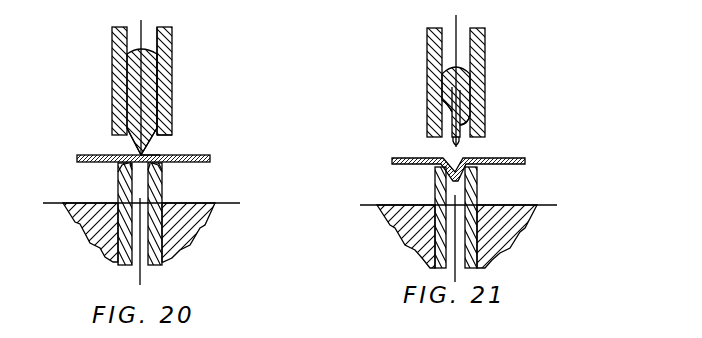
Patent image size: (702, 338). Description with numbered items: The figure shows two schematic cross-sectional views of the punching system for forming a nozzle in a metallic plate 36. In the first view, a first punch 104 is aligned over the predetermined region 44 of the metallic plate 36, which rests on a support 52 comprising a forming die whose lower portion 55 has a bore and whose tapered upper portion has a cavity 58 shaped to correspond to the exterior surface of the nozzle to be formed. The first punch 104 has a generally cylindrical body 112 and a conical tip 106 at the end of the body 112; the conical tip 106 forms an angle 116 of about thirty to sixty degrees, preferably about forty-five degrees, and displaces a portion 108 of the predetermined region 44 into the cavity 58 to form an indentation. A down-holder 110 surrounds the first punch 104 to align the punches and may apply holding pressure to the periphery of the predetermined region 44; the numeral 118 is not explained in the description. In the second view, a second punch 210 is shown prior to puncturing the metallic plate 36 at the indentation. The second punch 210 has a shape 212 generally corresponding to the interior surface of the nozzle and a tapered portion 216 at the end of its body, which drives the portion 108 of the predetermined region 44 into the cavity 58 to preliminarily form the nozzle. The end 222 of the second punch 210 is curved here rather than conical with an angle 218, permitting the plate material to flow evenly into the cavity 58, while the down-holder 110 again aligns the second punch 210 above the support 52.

In FIG. 20, the first punch 104 is at (130, 62).
In FIG. 20, the down-holder 110 is at (195, 88).
In FIG. 21, the down-holder 110 is at (486, 108).
In FIG. 20, the body 112 is at (155, 65).
In FIG. 20, the inner wall of tube 118 is at (162, 68).
In FIG. 20, the angle 116 is at (168, 138).
In FIG. 20, the conical tip 106 is at (133, 142).
In FIG. 20, the predetermined region 44 is at (153, 155).
In FIG. 20, the metallic plate 36 is at (88, 157).
In FIG. 21, the metallic plate 36 is at (420, 158).
In FIG. 20, the cavity 58 is at (124, 176).
In FIG. 20, the lower portion 55 is at (163, 190).
In FIG. 21, the lower portion 55 is at (478, 201).
In FIG. 20, the support 52 is at (187, 247).
In FIG. 21, the support 52 is at (492, 258).
In FIG. 21, the second punch 210 is at (440, 84).
In FIG. 21, the tapered portion 216 is at (464, 91).
In FIG. 21, the angle 218 is at (447, 105).
In FIG. 21, the shape 212 is at (462, 118).
In FIG. 21, the end 222 is at (460, 147).
In FIG. 21, the portion 108 is at (438, 173).